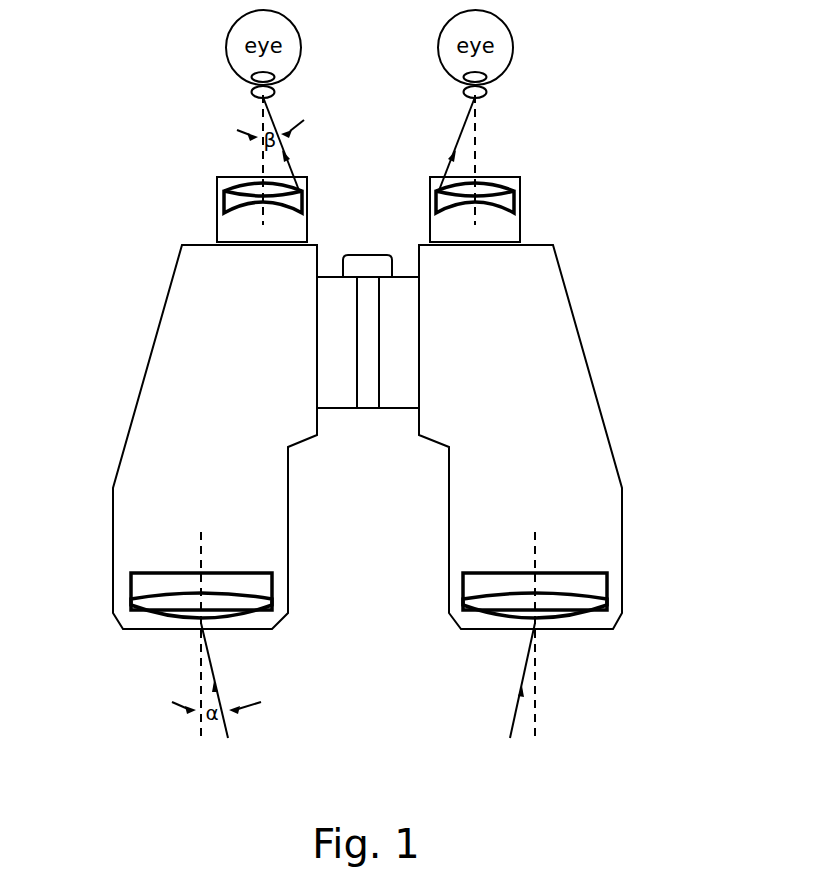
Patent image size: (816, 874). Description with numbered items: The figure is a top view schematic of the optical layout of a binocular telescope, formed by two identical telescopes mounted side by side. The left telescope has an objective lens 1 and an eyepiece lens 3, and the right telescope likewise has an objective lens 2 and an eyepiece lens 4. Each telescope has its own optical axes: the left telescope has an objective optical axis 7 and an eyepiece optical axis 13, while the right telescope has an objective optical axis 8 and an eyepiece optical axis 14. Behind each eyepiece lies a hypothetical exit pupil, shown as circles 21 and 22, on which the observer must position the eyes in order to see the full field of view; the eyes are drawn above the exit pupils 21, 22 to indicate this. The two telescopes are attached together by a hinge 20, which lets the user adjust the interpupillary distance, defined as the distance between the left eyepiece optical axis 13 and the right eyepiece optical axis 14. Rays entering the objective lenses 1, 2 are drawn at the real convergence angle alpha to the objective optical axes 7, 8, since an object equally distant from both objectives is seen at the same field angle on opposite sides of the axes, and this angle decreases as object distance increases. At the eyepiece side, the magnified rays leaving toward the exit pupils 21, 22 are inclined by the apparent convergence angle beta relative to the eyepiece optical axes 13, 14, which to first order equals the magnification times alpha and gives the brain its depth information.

The objective lens 1 is at (130, 602).
The objective lens 2 is at (608, 592).
The eyepiece lens 3 is at (223, 198).
The eyepiece lens 4 is at (512, 205).
The objective optical axis 7 is at (197, 685).
The objective optical axis 8 is at (537, 677).
The eyepiece optical axis 13 is at (260, 160).
The eyepiece optical axis 14 is at (475, 147).
The hinge 20 is at (370, 408).
The exit pupil 21 is at (252, 97).
The exit pupil 22 is at (478, 97).